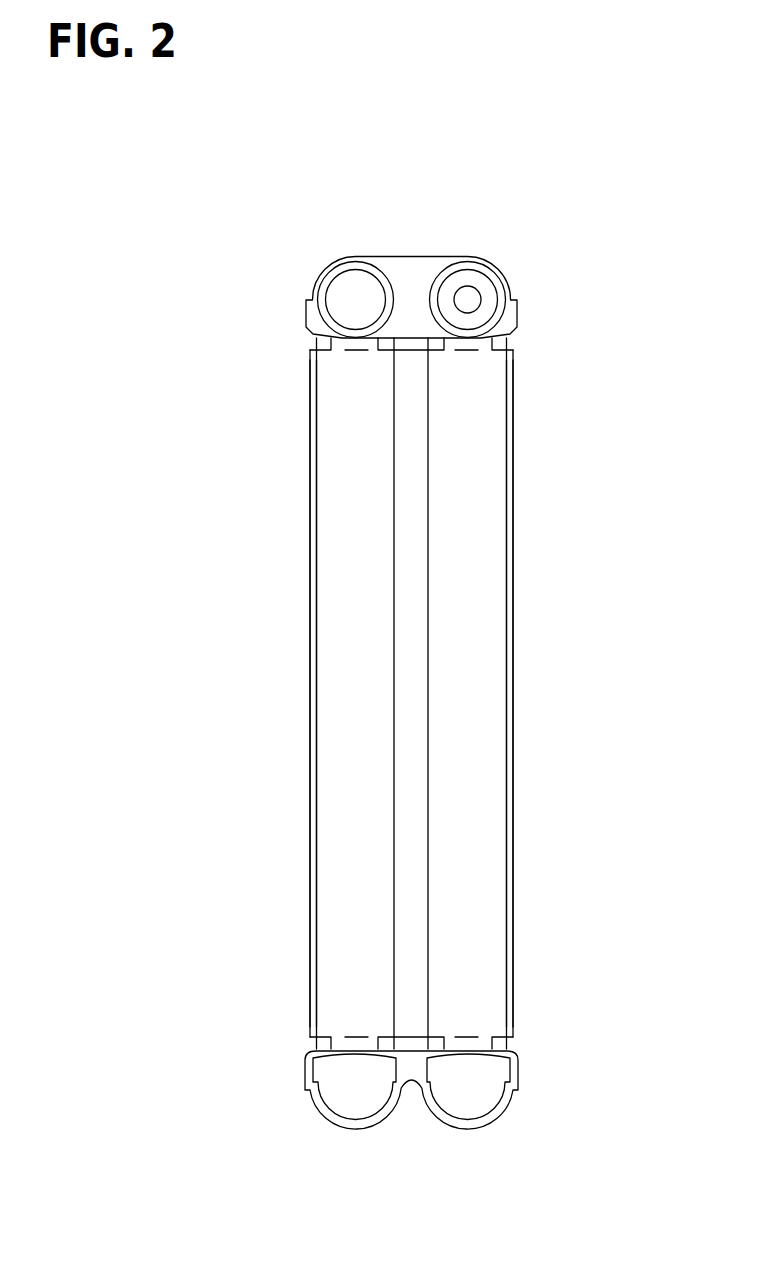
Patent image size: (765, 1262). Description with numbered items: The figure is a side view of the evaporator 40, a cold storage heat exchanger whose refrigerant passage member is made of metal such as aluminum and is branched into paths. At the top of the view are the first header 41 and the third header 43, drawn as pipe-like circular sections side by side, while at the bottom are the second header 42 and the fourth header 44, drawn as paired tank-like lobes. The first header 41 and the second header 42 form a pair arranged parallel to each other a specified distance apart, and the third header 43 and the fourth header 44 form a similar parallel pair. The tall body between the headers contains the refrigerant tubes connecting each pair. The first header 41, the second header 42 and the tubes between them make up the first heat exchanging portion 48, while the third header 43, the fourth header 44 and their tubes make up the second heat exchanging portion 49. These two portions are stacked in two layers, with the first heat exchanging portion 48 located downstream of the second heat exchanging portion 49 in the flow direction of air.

The evaporator 40 is at (537, 377).
The first header 41 is at (475, 263).
The second header 42 is at (492, 1117).
The third header 43 is at (373, 263).
The fourth header 44 is at (377, 1117).
The first heat exchanging portion 48 is at (517, 610).
The second heat exchanging portion 49 is at (290, 613).